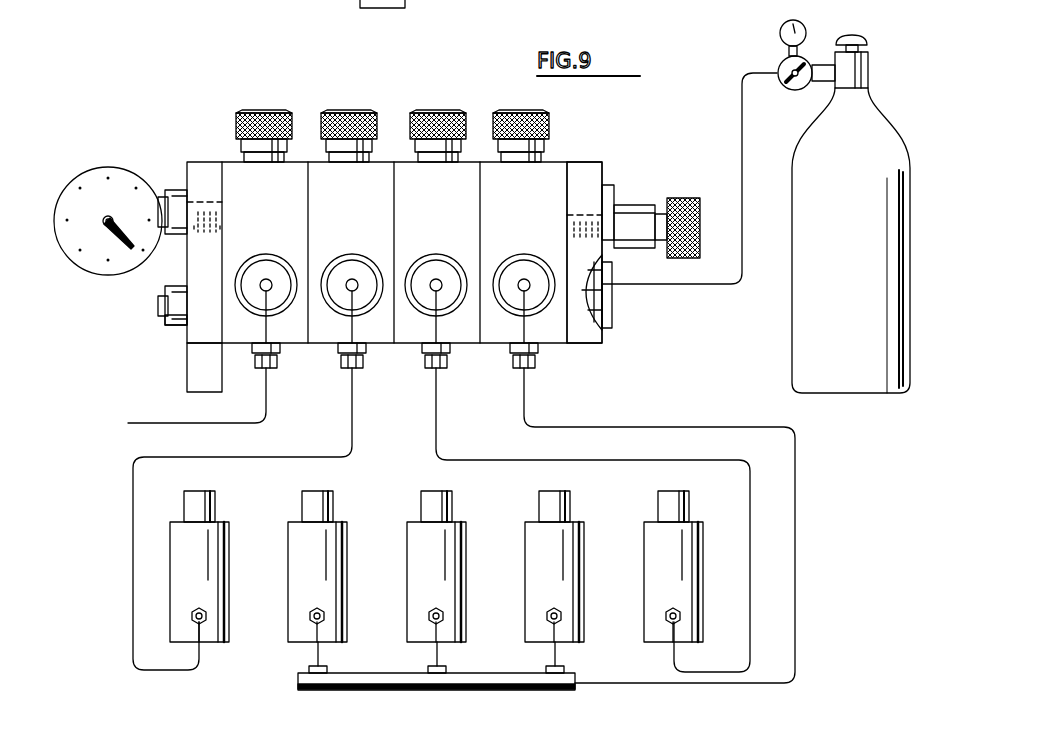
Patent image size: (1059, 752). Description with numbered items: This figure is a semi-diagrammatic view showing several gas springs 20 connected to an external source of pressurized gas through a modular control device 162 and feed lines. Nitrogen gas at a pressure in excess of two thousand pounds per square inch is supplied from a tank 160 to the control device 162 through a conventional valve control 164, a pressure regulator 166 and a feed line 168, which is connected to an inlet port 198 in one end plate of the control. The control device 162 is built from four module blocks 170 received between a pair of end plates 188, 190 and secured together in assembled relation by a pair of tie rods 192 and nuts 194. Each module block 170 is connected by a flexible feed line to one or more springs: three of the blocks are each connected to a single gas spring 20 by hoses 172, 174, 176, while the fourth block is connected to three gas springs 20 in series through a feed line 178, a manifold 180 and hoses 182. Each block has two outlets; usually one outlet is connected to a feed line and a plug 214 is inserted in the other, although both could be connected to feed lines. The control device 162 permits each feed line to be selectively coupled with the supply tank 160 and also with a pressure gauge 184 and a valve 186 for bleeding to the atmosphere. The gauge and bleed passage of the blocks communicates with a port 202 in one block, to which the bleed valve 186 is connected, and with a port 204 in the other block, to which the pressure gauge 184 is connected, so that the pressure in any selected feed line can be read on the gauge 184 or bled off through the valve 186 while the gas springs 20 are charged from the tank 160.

The gas spring 20 is at (287, 514).
The supply gas tank 160 is at (872, 112).
The control device 162 is at (187, 152).
The valve control 164 is at (858, 35).
The pressure regulator 166 is at (772, 62).
The feed line 168 is at (742, 107).
The module block 170 is at (318, 165).
The hose 172 is at (165, 422).
The hose 174 is at (133, 530).
The hose 176 is at (560, 460).
The feed line 178 is at (718, 404).
The manifold 180 is at (298, 686).
The hoses 182 is at (312, 658).
The pressure gauge 184 is at (82, 166).
The valve 186 is at (683, 196).
The end plate 188 is at (205, 160).
The end plate 190 is at (580, 162).
The tie rod 192 is at (158, 303).
The nut 194 is at (172, 328).
The inlet port 198 is at (604, 290).
The port 202 is at (567, 218).
The port 204 is at (215, 216).
The plug 214 is at (422, 370).